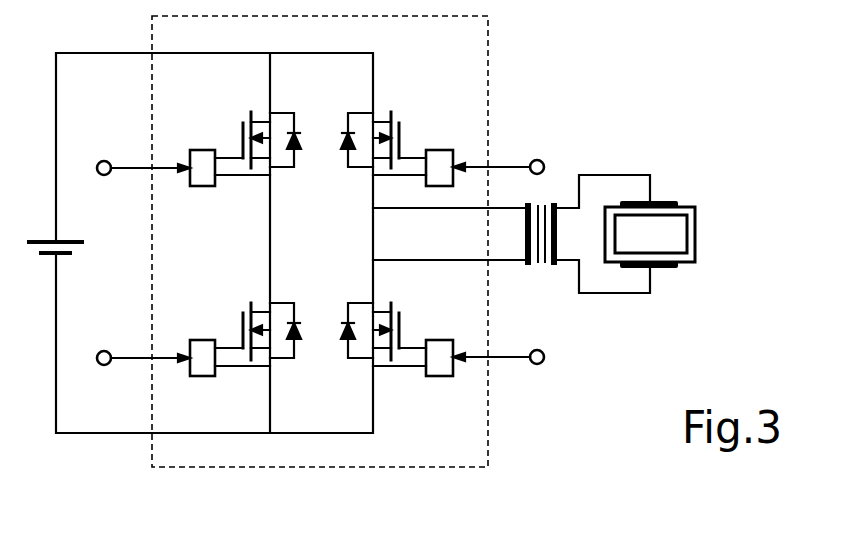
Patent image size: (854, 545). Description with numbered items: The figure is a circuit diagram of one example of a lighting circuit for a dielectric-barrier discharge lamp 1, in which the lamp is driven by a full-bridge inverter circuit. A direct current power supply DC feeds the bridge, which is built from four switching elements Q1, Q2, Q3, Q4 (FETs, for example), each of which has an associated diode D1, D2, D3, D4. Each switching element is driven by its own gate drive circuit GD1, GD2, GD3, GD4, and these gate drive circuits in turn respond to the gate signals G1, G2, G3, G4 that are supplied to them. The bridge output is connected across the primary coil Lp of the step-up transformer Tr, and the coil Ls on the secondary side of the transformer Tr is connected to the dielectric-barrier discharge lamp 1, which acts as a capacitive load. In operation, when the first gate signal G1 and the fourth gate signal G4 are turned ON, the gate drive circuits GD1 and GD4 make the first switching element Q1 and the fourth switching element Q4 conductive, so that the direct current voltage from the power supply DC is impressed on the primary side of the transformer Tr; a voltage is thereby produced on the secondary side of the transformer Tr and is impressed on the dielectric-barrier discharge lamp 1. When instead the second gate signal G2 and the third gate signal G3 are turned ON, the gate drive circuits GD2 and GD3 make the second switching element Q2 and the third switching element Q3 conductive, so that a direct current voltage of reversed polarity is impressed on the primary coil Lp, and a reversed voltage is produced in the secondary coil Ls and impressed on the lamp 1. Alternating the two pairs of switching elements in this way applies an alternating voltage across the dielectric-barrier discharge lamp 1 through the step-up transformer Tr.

The direct current power supply DC is at (38, 250).
The first gate signal G1 is at (140, 151).
The second gate signal G2 is at (140, 344).
The third gate signal G3 is at (501, 121).
The fourth gate signal G4 is at (501, 340).
The gate drive circuit GD1 is at (201, 150).
The gate drive circuit GD2 is at (201, 340).
The gate drive circuit GD3 is at (443, 150).
The gate drive circuit GD4 is at (443, 340).
The first switching element Q1 is at (250, 116).
The second switching element Q2 is at (250, 308).
The third switching element Q3 is at (392, 116).
The fourth switching element Q4 is at (392, 308).
The diode D1 is at (296, 113).
The diode D2 is at (296, 303).
The diode D3 is at (348, 113).
The diode D4 is at (348, 303).
The primary coil Lp is at (450, 234).
The coil on the secondary side Ls is at (602, 234).
The step-up transformer Tr is at (541, 264).
The dielectric-barrier discharge lamp 1 is at (697, 232).